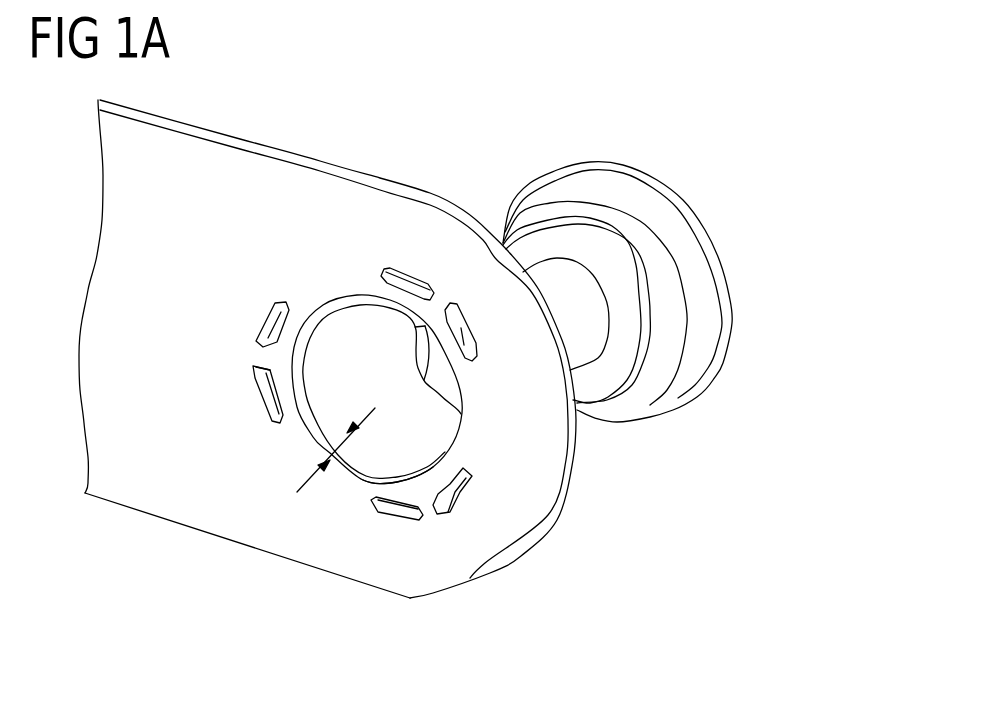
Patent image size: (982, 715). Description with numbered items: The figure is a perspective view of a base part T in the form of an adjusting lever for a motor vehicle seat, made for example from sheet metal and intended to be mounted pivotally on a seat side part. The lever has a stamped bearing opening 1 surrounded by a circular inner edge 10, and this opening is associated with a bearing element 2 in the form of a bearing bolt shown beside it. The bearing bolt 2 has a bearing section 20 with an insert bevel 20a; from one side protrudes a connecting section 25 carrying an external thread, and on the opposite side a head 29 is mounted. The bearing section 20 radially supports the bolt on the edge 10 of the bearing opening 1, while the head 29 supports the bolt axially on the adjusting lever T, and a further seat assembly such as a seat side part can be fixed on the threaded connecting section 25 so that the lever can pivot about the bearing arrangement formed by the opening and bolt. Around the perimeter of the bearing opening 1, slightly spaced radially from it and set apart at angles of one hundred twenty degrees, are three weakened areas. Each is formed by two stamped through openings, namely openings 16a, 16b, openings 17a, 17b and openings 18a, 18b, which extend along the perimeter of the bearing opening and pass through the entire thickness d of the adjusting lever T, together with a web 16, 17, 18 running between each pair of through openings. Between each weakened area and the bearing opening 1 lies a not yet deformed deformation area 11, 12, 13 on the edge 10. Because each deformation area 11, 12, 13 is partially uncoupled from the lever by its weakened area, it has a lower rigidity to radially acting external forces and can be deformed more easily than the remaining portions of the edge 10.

The bearing opening 1 is at (347, 335).
The bearing element 2 is at (669, 246).
The inner edge 10 is at (484, 383).
The deformation area 11 is at (428, 315).
The deformation area 12 is at (418, 488).
The deformation area 13 is at (283, 358).
The web 16 is at (443, 302).
The through opening 16a is at (390, 273).
The through opening 16b is at (477, 345).
The web 17 is at (461, 571).
The through opening 17a is at (457, 493).
The through opening 17b is at (390, 513).
The web 18 is at (220, 357).
The through opening 18a is at (268, 397).
The through opening 18b is at (267, 325).
The bearing section 20 is at (635, 245).
The insert bevel 20a is at (647, 323).
The connecting section 25 is at (552, 278).
The head 29 is at (718, 348).
The base part T is at (274, 183).
The thickness d is at (333, 447).